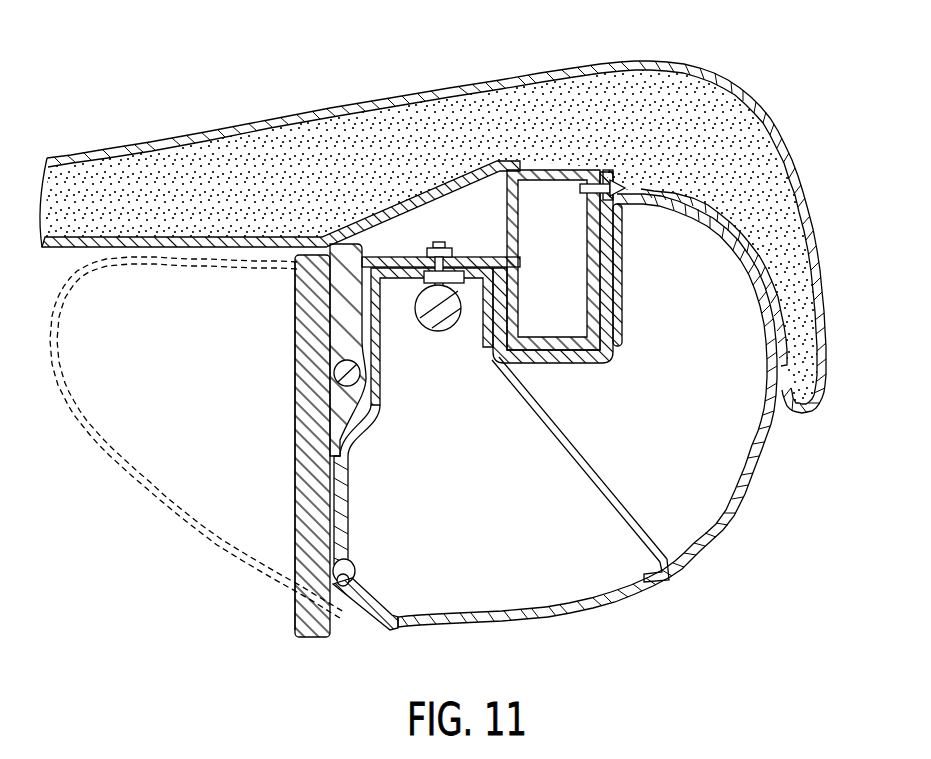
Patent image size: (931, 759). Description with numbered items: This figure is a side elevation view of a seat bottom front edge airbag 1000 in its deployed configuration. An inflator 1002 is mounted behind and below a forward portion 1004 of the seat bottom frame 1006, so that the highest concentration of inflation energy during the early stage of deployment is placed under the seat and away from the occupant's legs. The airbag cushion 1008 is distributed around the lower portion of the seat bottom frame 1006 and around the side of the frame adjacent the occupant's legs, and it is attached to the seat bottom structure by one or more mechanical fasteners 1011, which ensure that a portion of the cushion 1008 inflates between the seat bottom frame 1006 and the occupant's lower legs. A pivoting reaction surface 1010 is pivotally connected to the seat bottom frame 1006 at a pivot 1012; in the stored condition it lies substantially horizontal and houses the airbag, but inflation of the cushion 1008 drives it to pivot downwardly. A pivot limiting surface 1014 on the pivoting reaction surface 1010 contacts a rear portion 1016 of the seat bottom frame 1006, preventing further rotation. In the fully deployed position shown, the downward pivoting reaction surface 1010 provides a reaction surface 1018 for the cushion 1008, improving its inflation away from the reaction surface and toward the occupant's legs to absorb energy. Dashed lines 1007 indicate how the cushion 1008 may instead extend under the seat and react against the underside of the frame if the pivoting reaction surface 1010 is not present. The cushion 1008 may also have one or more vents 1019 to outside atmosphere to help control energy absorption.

The seat bottom front edge airbag 1000 is at (826, 154).
The inflator 1002 is at (447, 302).
The forward portion 1004 is at (580, 172).
The seat bottom frame 1006 is at (240, 230).
The dashed lines 1007 is at (130, 472).
The airbag cushion 1008 is at (762, 452).
The pivoting reaction surface 1010 is at (296, 520).
The mechanical fastener 1011 is at (628, 196).
The pivot 1012 is at (340, 377).
The pivot limiting surface 1014 is at (294, 310).
The rear portion 1016 is at (334, 302).
The reaction surface 1018 is at (352, 600).
The vent 1019 is at (453, 622).